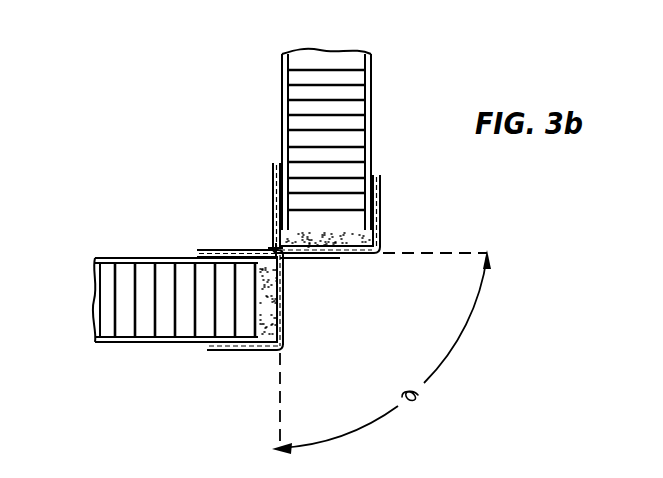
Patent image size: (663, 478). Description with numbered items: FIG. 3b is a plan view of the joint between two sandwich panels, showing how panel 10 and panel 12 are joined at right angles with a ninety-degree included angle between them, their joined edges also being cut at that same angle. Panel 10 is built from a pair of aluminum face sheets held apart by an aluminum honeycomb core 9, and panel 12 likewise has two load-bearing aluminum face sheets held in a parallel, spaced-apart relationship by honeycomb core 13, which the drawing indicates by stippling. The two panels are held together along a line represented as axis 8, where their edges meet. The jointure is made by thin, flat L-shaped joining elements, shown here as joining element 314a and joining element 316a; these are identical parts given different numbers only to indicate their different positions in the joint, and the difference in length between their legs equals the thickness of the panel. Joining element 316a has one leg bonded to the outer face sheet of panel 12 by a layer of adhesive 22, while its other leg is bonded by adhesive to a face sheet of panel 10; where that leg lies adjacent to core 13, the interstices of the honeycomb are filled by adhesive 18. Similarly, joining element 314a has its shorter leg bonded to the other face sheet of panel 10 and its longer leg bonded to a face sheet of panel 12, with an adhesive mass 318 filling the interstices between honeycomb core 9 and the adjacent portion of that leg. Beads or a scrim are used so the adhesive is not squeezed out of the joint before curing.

The axis 8 is at (273, 248).
The honeycomb core 9 is at (112, 325).
The sandwich panel 10 is at (110, 292).
The sandwich panel 12 is at (353, 90).
The honeycomb core 13 is at (327, 62).
The adhesive 18 is at (357, 255).
The layer of adhesive 22 is at (373, 165).
The joining element 314a is at (283, 302).
The joining element 316a is at (380, 200).
The adhesive mass 318 is at (267, 292).